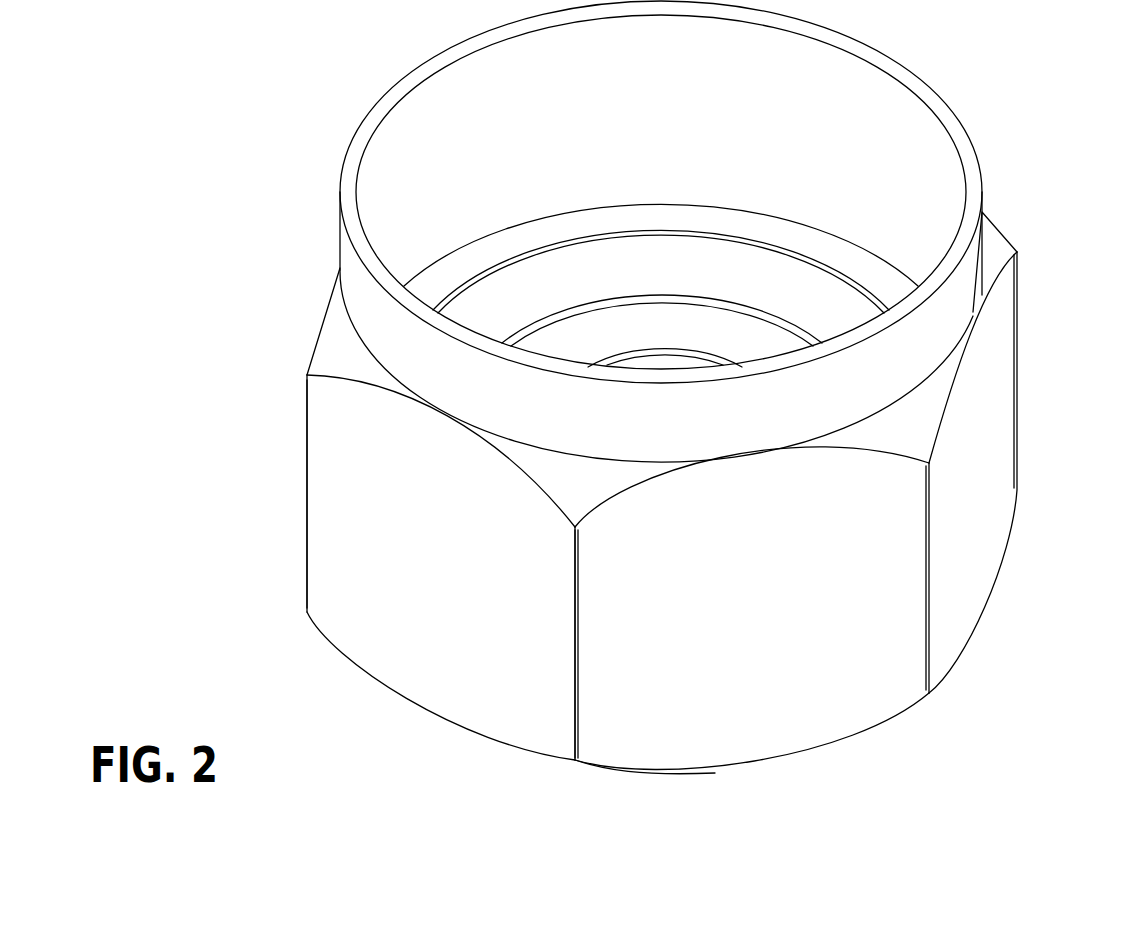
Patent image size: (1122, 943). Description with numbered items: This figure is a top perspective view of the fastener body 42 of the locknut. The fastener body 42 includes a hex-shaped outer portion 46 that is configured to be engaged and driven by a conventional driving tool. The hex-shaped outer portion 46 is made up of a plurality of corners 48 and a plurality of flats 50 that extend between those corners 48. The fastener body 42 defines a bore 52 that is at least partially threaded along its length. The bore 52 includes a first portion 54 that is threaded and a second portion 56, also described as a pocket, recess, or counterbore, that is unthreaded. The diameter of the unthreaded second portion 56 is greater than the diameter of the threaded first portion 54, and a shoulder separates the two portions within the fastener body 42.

The fastener body 42 is at (303, 340).
The hex-shaped outer portion 46 is at (306, 497).
The corners 48 is at (575, 698).
The flats 50 is at (753, 658).
The bore 52 is at (678, 344).
The first portion 54 is at (1053, 667).
The second portion 56 is at (962, 120).